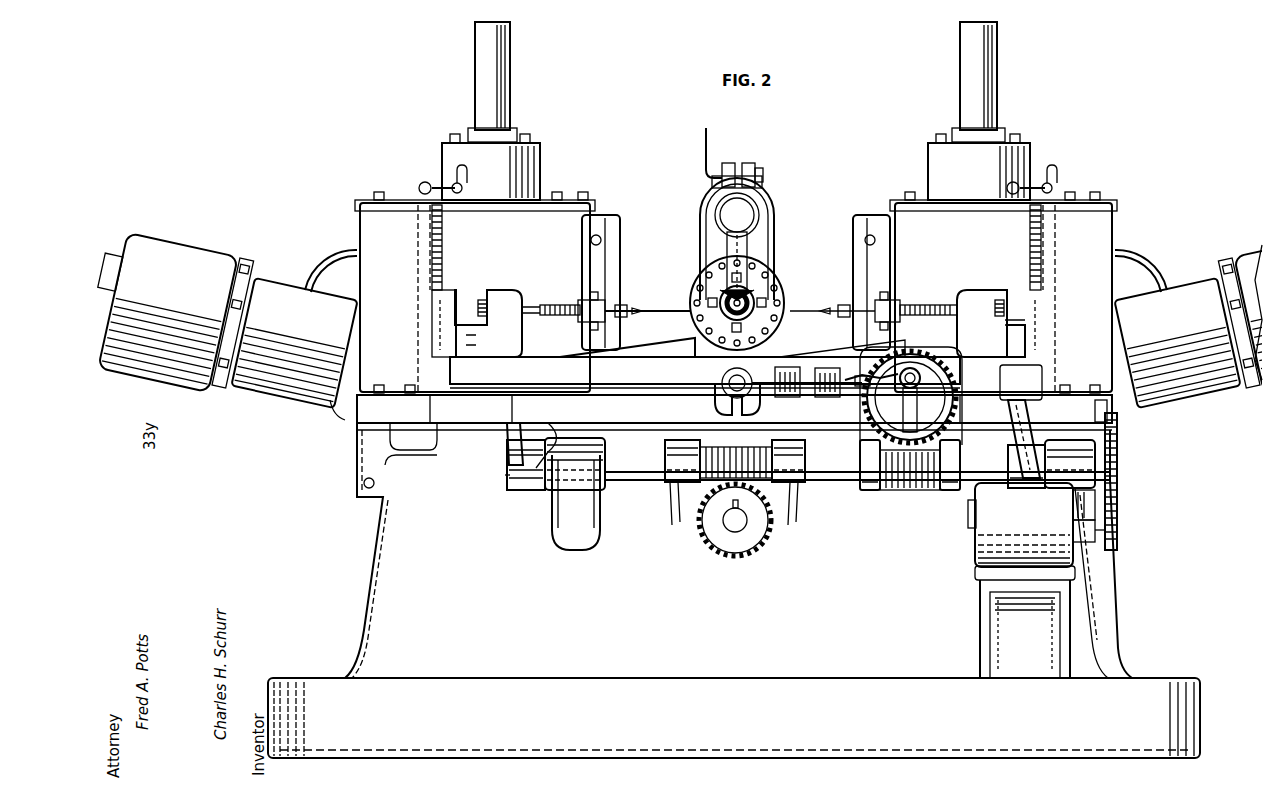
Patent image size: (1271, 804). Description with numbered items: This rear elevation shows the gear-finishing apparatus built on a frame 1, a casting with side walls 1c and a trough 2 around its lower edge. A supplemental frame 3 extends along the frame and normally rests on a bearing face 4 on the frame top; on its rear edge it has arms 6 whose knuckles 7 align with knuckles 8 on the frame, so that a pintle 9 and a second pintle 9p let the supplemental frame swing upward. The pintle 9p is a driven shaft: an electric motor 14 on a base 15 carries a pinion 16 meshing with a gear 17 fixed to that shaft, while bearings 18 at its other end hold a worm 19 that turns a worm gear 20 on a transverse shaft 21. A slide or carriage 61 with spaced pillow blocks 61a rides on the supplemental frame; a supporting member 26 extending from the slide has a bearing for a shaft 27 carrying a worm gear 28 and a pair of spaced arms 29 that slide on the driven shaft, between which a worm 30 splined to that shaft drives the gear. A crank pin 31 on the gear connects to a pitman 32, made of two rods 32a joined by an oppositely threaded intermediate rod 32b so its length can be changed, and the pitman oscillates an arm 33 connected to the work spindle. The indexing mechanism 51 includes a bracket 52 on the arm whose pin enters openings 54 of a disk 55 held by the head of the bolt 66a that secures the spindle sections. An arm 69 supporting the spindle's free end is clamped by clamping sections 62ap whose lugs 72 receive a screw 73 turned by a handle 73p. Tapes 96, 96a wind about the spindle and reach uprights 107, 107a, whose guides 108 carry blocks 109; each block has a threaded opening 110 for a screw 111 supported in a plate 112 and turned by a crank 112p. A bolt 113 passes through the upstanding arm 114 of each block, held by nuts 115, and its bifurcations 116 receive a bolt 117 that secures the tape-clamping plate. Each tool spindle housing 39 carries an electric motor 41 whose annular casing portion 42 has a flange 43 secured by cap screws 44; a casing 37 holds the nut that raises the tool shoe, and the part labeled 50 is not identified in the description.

The frame 1 is at (738, 550).
The side walls 1c is at (545, 617).
The trough 2 is at (734, 718).
The supplemental frame 3 is at (734, 412).
The bearing face 4 is at (740, 323).
The arms 6 is at (773, 439).
The knuckle 7 is at (520, 490).
The knuckle 8 is at (605, 454).
The pintle 9 is at (503, 492).
The pintle or driven shaft 9p is at (845, 478).
The motor 14 is at (1020, 525).
The base 15 is at (1025, 622).
The pinion 16 is at (1118, 540).
The gear 17 is at (1118, 496).
The bearings 18 is at (665, 460).
The worm 19 is at (742, 450).
The worm gear 20 is at (740, 552).
The transverse shaft 21 is at (735, 520).
The supporting member 26 is at (950, 396).
The shaft 27 is at (906, 397).
The worm gear 28 is at (958, 408).
The arms 29 is at (910, 461).
The worm 30 is at (903, 490).
The crank pin 31 is at (885, 400).
The pitman 32 is at (858, 375).
The rods 32a is at (782, 397).
The intermediate rod 32b is at (818, 397).
The arm 33 is at (714, 396).
The casing 37 is at (736, 167).
The tubular member 39 is at (343, 422).
The electric motor 41 is at (1248, 252).
The extended annular portion 42 is at (232, 300).
The flange 43 is at (262, 320).
The cap screws 44 is at (255, 275).
The arc guide 50 is at (338, 262).
The indexing mechanism 51 is at (720, 239).
The bracket 52 is at (755, 242).
The openings 54 is at (627, 349).
The disk 55 is at (757, 321).
The slide or carriage 61 is at (705, 372).
The pillow blocks 61a is at (780, 345).
The clamping sections 62ap is at (750, 163).
The bolt 66a is at (748, 300).
The arm 69 is at (737, 215).
The lug 72 is at (730, 162).
The screw 73 is at (763, 172).
The handle 73p is at (710, 132).
The tapes 96 is at (790, 310).
The tapes 96a is at (665, 308).
The upright 107 is at (1003, 292).
The upright 107a is at (475, 292).
The guides 108 is at (442, 250).
The blocks 109 is at (440, 312).
The screw threaded opening 110 is at (435, 326).
The screw 111 is at (442, 232).
The plate 112 is at (416, 206).
The crank 112p is at (452, 172).
The screw threaded rod or bolt 113 is at (558, 316).
The upstanding arm 114 is at (505, 296).
The nuts 115 is at (480, 298).
The bifurcations 116 is at (605, 300).
The bolt 117 is at (622, 318).